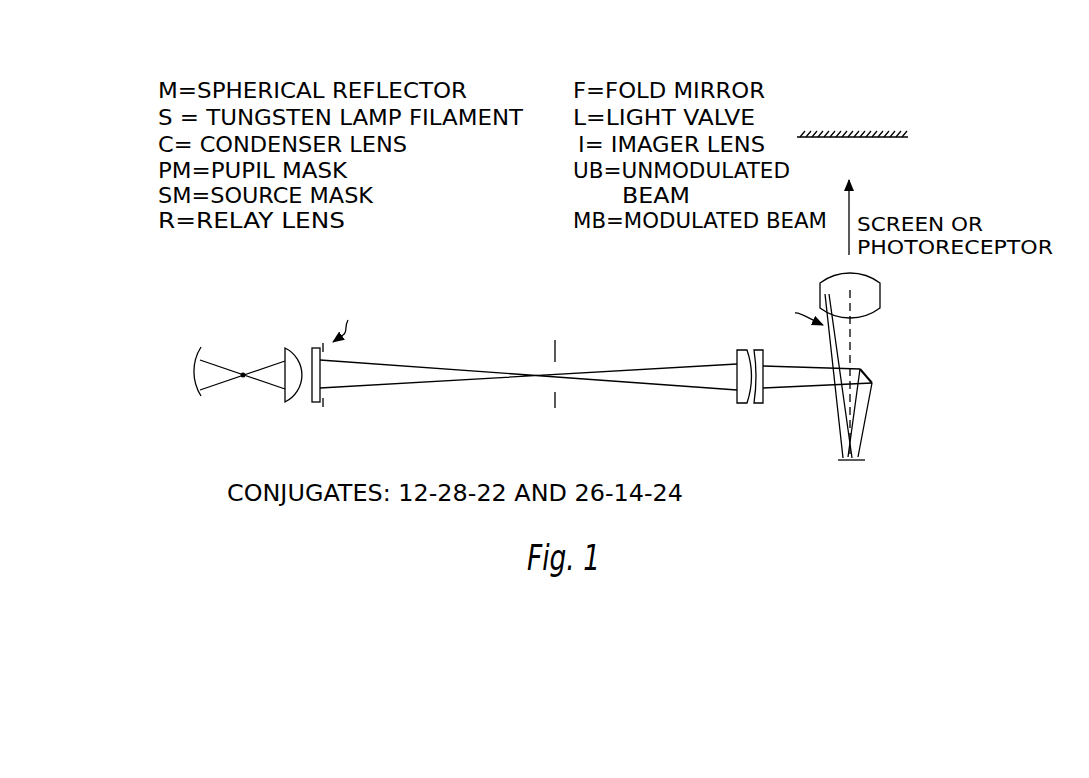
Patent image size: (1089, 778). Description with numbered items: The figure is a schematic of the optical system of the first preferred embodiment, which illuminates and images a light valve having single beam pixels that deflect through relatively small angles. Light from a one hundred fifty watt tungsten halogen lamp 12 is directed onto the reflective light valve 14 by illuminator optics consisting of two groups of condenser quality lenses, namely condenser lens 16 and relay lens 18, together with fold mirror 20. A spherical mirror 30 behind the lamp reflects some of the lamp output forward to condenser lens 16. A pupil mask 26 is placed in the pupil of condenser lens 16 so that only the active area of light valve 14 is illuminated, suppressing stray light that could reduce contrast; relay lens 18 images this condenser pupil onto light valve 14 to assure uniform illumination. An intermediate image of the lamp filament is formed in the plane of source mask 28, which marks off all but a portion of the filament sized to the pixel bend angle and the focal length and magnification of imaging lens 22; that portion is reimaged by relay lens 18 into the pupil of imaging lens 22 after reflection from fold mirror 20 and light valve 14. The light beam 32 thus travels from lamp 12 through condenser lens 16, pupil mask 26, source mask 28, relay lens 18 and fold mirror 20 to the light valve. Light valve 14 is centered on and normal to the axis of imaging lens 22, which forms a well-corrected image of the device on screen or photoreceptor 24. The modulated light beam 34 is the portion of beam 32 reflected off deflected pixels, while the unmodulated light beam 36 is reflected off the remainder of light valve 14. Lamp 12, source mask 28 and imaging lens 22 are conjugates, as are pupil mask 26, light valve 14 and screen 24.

The tungsten halogen lamp 12 is at (245, 373).
The light valve 14 is at (867, 466).
The condenser lens 16 is at (310, 403).
The relay lens 18 is at (743, 405).
The fold mirror 20 is at (872, 372).
The imaging lens 22 is at (870, 297).
The screen or photoreceptor 24 is at (877, 138).
The pupil mask 26 is at (325, 352).
The source mask 28 is at (560, 353).
The mirror 30 is at (202, 398).
The light beam 32 is at (422, 390).
The modulated light beam 34 is at (860, 333).
The unmodulated light beam 36 is at (800, 310).